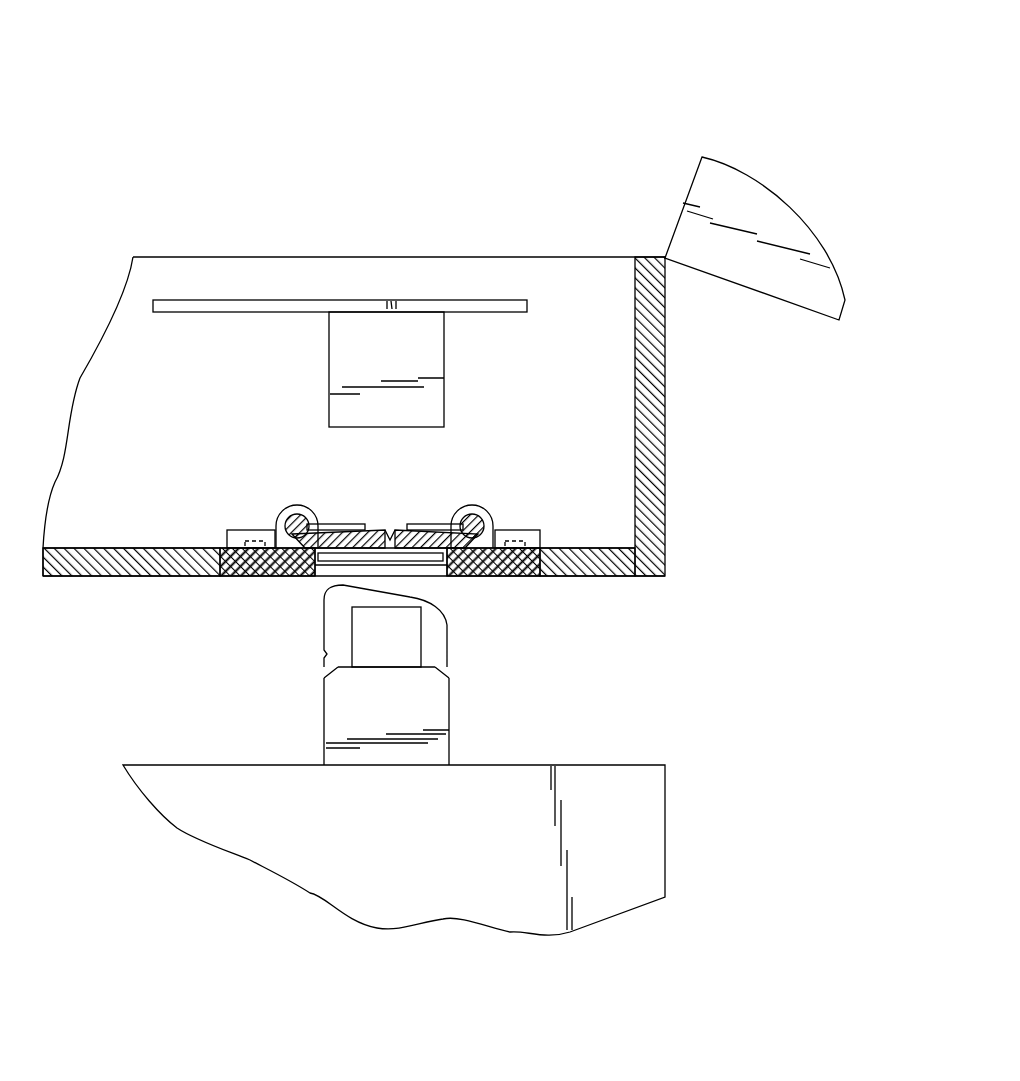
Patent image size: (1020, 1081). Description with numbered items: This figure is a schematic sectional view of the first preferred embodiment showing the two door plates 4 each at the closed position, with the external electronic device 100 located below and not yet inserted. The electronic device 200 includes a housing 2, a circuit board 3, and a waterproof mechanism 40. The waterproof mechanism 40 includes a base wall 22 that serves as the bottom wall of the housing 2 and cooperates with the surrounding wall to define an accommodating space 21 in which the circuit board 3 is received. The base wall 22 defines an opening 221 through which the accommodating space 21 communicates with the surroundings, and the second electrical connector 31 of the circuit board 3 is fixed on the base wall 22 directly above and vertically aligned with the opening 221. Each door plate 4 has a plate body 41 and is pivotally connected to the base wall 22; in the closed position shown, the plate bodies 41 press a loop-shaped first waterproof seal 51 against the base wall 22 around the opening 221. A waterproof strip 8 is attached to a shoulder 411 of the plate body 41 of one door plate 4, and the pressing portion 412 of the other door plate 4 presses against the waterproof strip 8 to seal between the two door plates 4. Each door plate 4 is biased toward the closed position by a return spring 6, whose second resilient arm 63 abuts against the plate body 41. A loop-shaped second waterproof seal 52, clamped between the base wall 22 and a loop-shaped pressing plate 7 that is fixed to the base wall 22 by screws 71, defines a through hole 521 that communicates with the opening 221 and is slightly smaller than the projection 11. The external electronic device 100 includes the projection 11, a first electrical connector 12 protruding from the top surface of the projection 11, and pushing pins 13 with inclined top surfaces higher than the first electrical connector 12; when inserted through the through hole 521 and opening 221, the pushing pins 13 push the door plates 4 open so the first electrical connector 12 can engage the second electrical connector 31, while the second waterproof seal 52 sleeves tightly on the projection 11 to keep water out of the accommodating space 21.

The electronic device 200 is at (553, 196).
The housing 2 is at (678, 449).
The accommodating space 21 is at (608, 393).
The base wall 22 is at (585, 547).
The opening 221 is at (407, 562).
The circuit board 3 is at (266, 300).
The second electrical connector 31 is at (417, 355).
The waterproof mechanism 40 is at (258, 515).
The door plate 4 is at (408, 518).
The shoulder 411 is at (417, 528).
The pressing portion 412 is at (385, 530).
The plate body 41 is at (443, 524).
The return spring 6 is at (350, 518).
The second resilient arm 63 is at (332, 527).
The waterproof strip 8 is at (385, 530).
The pressing plate 7 is at (282, 578).
The screw 71 is at (228, 529).
The first waterproof seal 51 is at (497, 534).
The second waterproof seal 52 is at (307, 578).
The through hole 521 is at (463, 573).
The first electrical connector 12 is at (424, 636).
The pushing pin 13 is at (450, 615).
The projection 11 is at (449, 723).
The external electronic device 100 is at (683, 786).